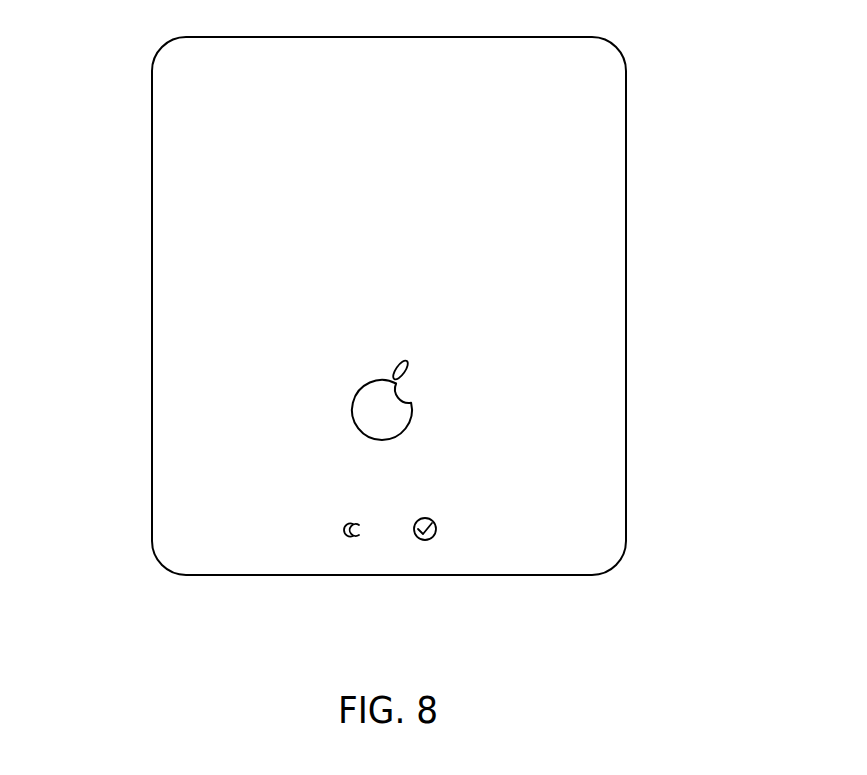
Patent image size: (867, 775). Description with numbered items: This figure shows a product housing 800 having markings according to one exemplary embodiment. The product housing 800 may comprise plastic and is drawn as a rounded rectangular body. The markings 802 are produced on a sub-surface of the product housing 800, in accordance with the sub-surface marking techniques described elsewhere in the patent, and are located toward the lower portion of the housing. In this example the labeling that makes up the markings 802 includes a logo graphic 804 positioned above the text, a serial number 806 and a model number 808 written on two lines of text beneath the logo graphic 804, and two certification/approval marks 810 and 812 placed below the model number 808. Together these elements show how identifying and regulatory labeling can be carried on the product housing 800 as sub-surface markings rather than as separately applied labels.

The product housing 800 is at (626, 243).
The markings 802 is at (188, 392).
The logo graphic 804 is at (415, 401).
The serial number 806 is at (302, 473).
The model number 808 is at (310, 495).
The certification/approval mark 810 is at (353, 539).
The certification/approval mark 812 is at (430, 540).